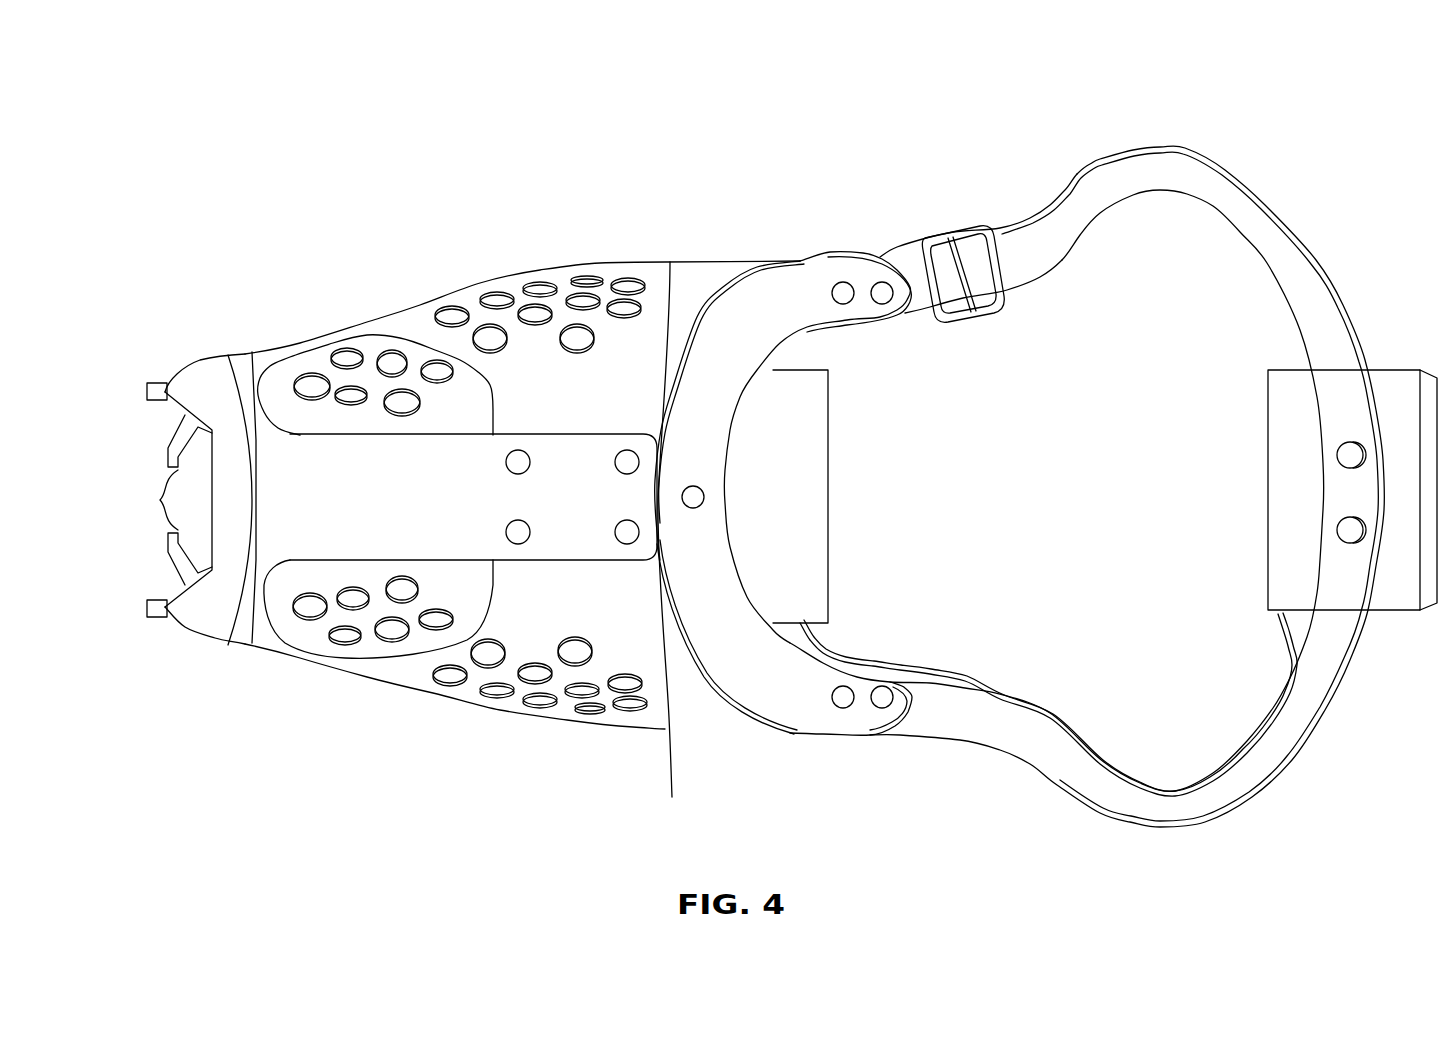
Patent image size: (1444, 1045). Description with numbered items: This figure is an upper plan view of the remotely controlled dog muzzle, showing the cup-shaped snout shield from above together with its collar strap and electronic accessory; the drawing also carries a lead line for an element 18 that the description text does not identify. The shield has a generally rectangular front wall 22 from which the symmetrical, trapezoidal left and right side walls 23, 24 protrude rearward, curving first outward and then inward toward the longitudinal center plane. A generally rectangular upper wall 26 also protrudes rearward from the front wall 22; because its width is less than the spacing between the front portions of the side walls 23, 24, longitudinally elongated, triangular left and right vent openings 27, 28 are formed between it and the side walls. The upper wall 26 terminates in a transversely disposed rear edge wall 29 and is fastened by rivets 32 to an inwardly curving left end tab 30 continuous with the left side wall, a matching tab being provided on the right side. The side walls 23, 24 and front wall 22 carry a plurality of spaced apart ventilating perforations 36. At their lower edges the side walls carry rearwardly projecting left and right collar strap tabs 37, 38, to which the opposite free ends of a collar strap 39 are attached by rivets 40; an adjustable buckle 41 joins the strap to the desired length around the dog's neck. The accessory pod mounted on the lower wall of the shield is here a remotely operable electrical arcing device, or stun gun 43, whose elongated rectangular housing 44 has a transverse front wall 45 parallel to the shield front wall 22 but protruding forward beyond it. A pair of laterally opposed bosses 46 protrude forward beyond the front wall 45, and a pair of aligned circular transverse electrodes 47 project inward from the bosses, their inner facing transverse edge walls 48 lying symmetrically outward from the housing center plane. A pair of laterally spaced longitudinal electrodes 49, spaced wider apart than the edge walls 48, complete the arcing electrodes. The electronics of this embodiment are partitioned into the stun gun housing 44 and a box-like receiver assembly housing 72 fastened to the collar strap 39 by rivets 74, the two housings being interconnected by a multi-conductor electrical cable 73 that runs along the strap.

The hole 18 is at (703, 503).
The front wall 22 is at (229, 355).
The left side wall 23 is at (338, 663).
The right side wall 24 is at (323, 355).
The upper wall 26 is at (482, 435).
The left vent opening 27 is at (313, 640).
The right vent opening 28 is at (307, 355).
The rear edge wall 29 is at (657, 550).
The left end tab 30 is at (477, 287).
The rivets 32 is at (527, 452).
The ventilating perforations 36 is at (382, 637).
The left collar strap tab 37 is at (668, 597).
The right collar strap tab 38 is at (673, 390).
The collar strap 39 is at (1052, 788).
The rivets 40 is at (847, 300).
The adjustable buckle 41 is at (967, 225).
The stun gun 43 is at (272, 352).
The housing 44 is at (807, 435).
The front wall 45 is at (210, 540).
The bosses 46 is at (200, 361).
The transverse electrodes 47 is at (251, 352).
The inner facing transverse edge walls 48 is at (162, 495).
The longitudinal electrodes 49 is at (152, 383).
The receiver assembly housing 72 is at (1268, 383).
The multi-conductor electrical cable 73 is at (1283, 630).
The rivets 74 is at (1337, 455).